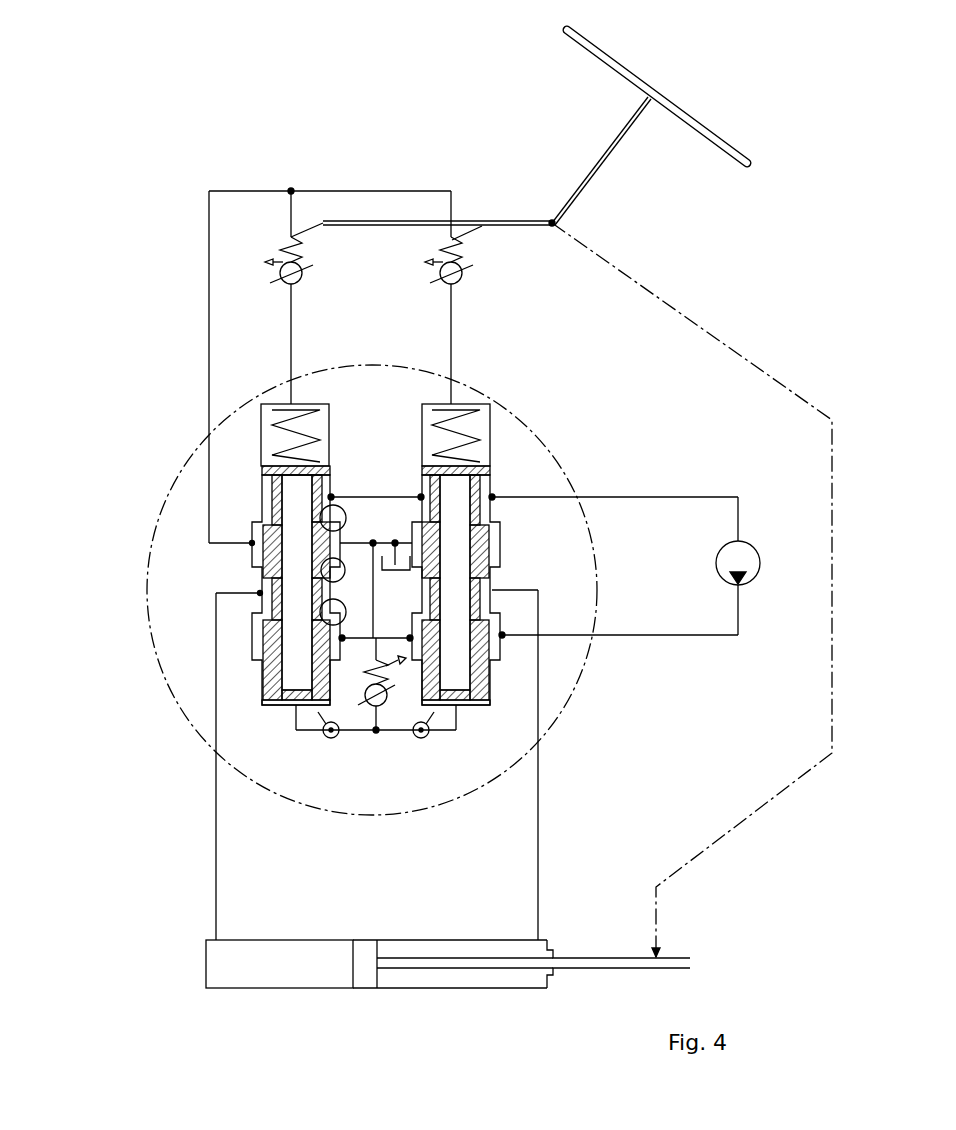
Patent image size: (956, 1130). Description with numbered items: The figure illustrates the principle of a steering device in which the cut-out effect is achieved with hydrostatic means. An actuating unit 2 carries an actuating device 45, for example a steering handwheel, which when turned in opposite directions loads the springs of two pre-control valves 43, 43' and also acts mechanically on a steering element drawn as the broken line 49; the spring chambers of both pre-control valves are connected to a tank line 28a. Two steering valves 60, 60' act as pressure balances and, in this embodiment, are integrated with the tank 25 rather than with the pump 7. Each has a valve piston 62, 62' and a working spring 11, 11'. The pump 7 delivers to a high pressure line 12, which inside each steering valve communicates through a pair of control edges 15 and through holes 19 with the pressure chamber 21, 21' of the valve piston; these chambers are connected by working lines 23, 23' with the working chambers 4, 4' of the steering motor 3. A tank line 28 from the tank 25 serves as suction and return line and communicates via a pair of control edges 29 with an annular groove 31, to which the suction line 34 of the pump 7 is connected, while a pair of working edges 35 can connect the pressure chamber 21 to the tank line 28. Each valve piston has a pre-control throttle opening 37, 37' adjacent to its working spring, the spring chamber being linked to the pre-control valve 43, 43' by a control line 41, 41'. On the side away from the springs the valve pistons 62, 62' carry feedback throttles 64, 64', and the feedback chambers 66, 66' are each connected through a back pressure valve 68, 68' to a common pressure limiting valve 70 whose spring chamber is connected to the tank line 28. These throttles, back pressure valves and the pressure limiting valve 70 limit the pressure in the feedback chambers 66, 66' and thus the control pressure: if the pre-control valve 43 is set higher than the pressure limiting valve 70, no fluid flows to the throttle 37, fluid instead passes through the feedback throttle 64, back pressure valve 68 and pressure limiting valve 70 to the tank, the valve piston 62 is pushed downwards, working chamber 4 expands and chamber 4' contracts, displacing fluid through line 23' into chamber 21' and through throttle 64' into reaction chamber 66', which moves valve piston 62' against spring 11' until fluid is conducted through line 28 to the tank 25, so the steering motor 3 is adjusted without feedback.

The actuating unit 2 is at (438, 172).
The steering motor 3 is at (377, 1000).
The working chamber 4 is at (376, 1015).
The working chamber 4' is at (533, 1012).
The piston pump 7 is at (746, 557).
The working spring 11 is at (319, 419).
The working spring 11' is at (435, 424).
The high pressure line 12 is at (727, 640).
The pair of control edges 15 is at (340, 610).
The through holes 19 is at (258, 597).
The pressure chamber 21 is at (278, 604).
The pressure chamber 21' is at (481, 590).
The working line 23 is at (162, 771).
The working line 23' is at (565, 765).
The tank 25 is at (406, 574).
The tank line 28 is at (378, 552).
The tank line 28a is at (209, 310).
The pair of control edges 29 is at (346, 516).
The annular groove 31 is at (334, 496).
The suction line 34 is at (640, 497).
The pair of working edges 35 is at (345, 570).
The throttle opening 37 is at (323, 448).
The throttle opening 37' is at (437, 449).
The control line 41 is at (277, 296).
The control line 41' is at (514, 297).
The pre-control valve 43 is at (262, 279).
The pre-control valve 43' is at (487, 260).
The actuating device 45 is at (682, 116).
The steering element 49 is at (740, 358).
The steering valve 60 is at (174, 486).
The steering valve 60' is at (582, 482).
The valve piston 62 is at (216, 684).
The valve piston 62' is at (527, 667).
The throttle opening 64 is at (309, 774).
The throttle opening 64' is at (457, 766).
The feedback chamber 66 is at (216, 776).
The feedback chamber 66' is at (510, 740).
The back pressure valve 68 is at (337, 786).
The back pressure valve 68' is at (433, 781).
The pressure limiting valve 70 is at (376, 697).